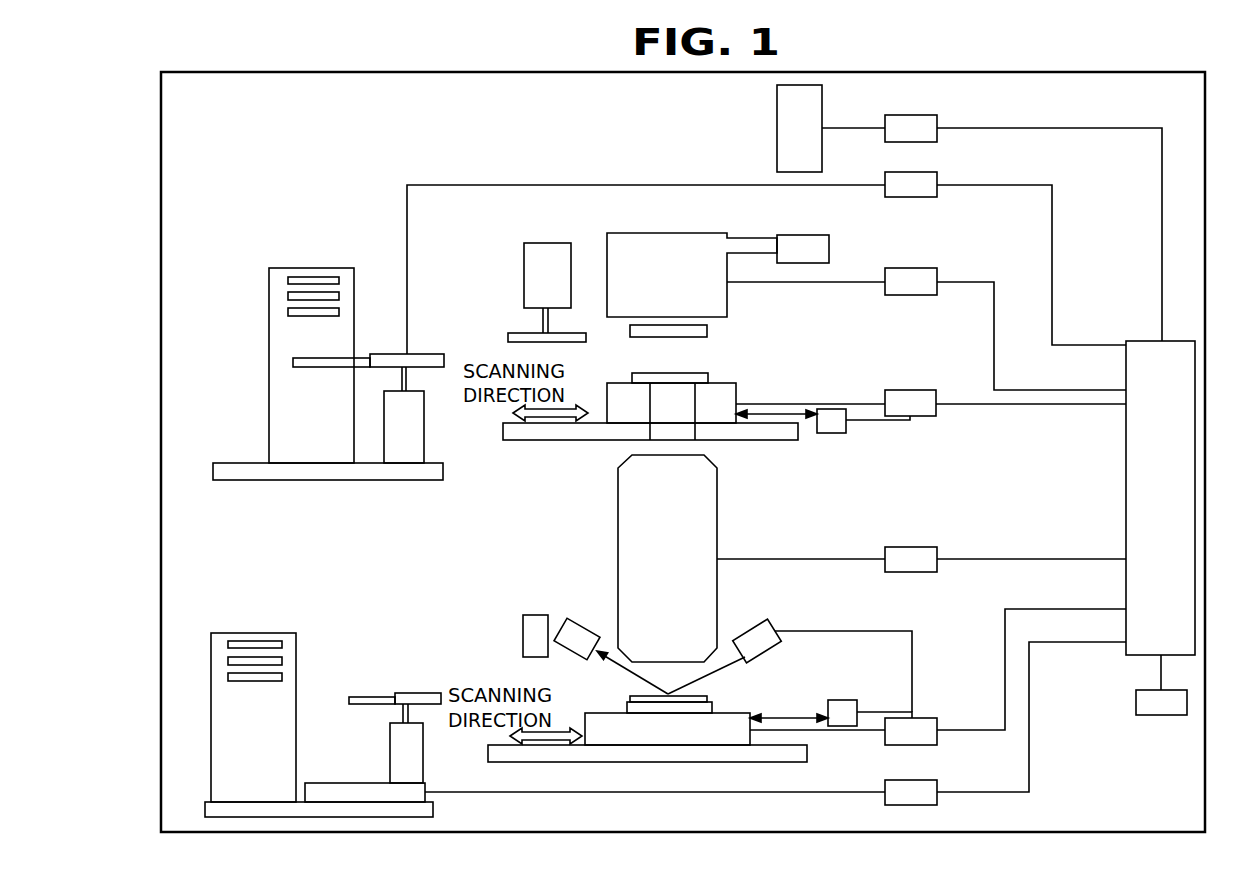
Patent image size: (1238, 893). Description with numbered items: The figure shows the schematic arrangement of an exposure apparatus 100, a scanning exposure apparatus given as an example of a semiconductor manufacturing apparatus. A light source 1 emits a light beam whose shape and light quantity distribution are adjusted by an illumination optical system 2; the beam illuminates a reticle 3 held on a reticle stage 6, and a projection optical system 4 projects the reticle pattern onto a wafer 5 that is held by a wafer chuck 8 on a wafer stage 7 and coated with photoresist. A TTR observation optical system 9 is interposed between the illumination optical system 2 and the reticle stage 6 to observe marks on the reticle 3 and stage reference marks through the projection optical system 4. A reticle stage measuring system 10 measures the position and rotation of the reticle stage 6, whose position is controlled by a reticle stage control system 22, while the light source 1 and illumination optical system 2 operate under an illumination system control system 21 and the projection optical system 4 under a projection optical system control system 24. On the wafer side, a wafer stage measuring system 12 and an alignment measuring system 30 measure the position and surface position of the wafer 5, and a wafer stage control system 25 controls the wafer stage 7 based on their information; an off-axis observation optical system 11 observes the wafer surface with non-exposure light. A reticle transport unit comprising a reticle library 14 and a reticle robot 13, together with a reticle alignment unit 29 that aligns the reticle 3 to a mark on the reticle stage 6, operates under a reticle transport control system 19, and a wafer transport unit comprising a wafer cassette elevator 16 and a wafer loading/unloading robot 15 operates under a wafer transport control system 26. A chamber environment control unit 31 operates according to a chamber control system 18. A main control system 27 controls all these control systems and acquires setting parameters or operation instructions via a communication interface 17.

The exposure apparatus 100 is at (160, 105).
The light source 1 is at (829, 248).
The illumination optical system 2 is at (668, 233).
The reticle 3 is at (708, 378).
The projection optical system 4 is at (717, 492).
The wafer 5 is at (707, 699).
The reticle stage 6 is at (607, 386).
The wafer stage 7 is at (584, 713).
The wafer chuck 8 is at (627, 706).
The TTR observation optical system 9 is at (707, 330).
The reticle stage measuring system 10 is at (832, 433).
The off-axis observation optical system 11 is at (533, 615).
The wafer stage measuring system 12 is at (845, 700).
The reticle robot 13 is at (386, 354).
The reticle library 14 is at (307, 268).
The wafer loading/unloading robot 15 is at (372, 697).
The wafer cassette elevator 16 is at (258, 633).
The communication interface 17 is at (1162, 715).
The chamber control system 18 is at (912, 115).
The reticle transport control system 19 is at (912, 172).
The illumination system control system 21 is at (912, 268).
The reticle stage control system 22 is at (912, 390).
The projection optical system control system 24 is at (912, 547).
The wafer stage control system 25 is at (912, 718).
The wafer transport control system 26 is at (912, 780).
The main control system 27 is at (1143, 341).
The reticle alignment unit 29 is at (548, 243).
The alignment measuring system 30 is at (587, 618).
The chamber environment control unit 31 is at (777, 122).